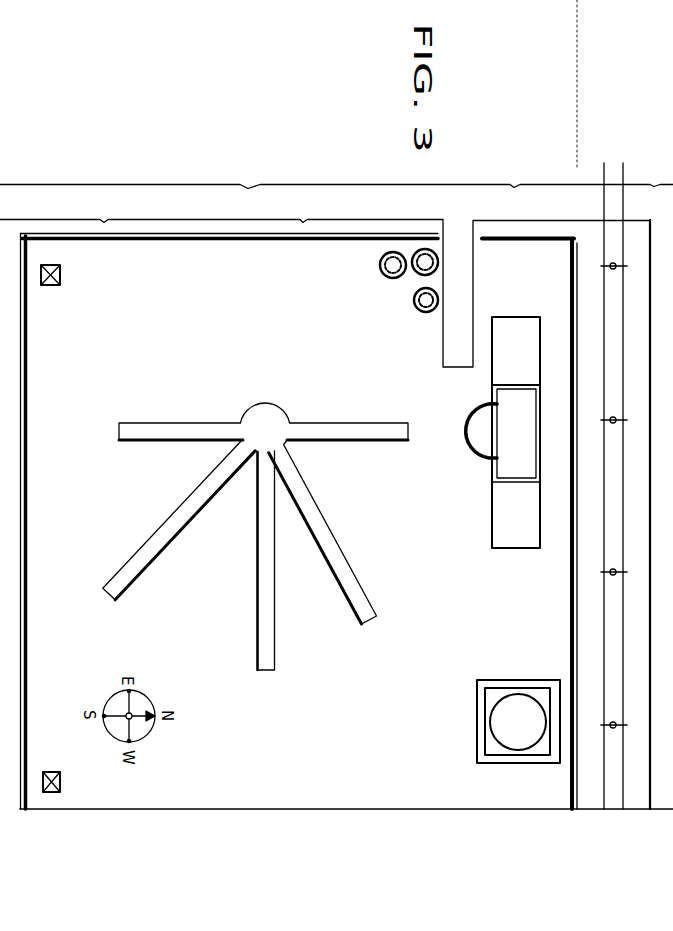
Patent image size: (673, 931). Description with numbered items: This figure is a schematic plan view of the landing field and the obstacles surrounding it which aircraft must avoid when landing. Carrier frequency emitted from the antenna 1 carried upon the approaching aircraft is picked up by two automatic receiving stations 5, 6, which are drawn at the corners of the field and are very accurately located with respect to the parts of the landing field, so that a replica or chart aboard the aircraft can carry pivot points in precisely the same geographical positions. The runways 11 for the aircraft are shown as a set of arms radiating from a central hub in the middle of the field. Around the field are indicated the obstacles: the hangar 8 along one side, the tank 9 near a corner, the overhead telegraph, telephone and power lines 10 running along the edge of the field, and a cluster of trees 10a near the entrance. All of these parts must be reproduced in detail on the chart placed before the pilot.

The antenna 1 is at (255, 497).
The automatic receiving station 5 is at (67, 282).
The automatic receiving station 6 is at (66, 781).
The hangar 8 is at (522, 447).
The tank 9 is at (513, 712).
The overhead telegraph, telephone and power lines 10 is at (606, 352).
The trees 10a is at (414, 274).
The runways 11 is at (150, 436).